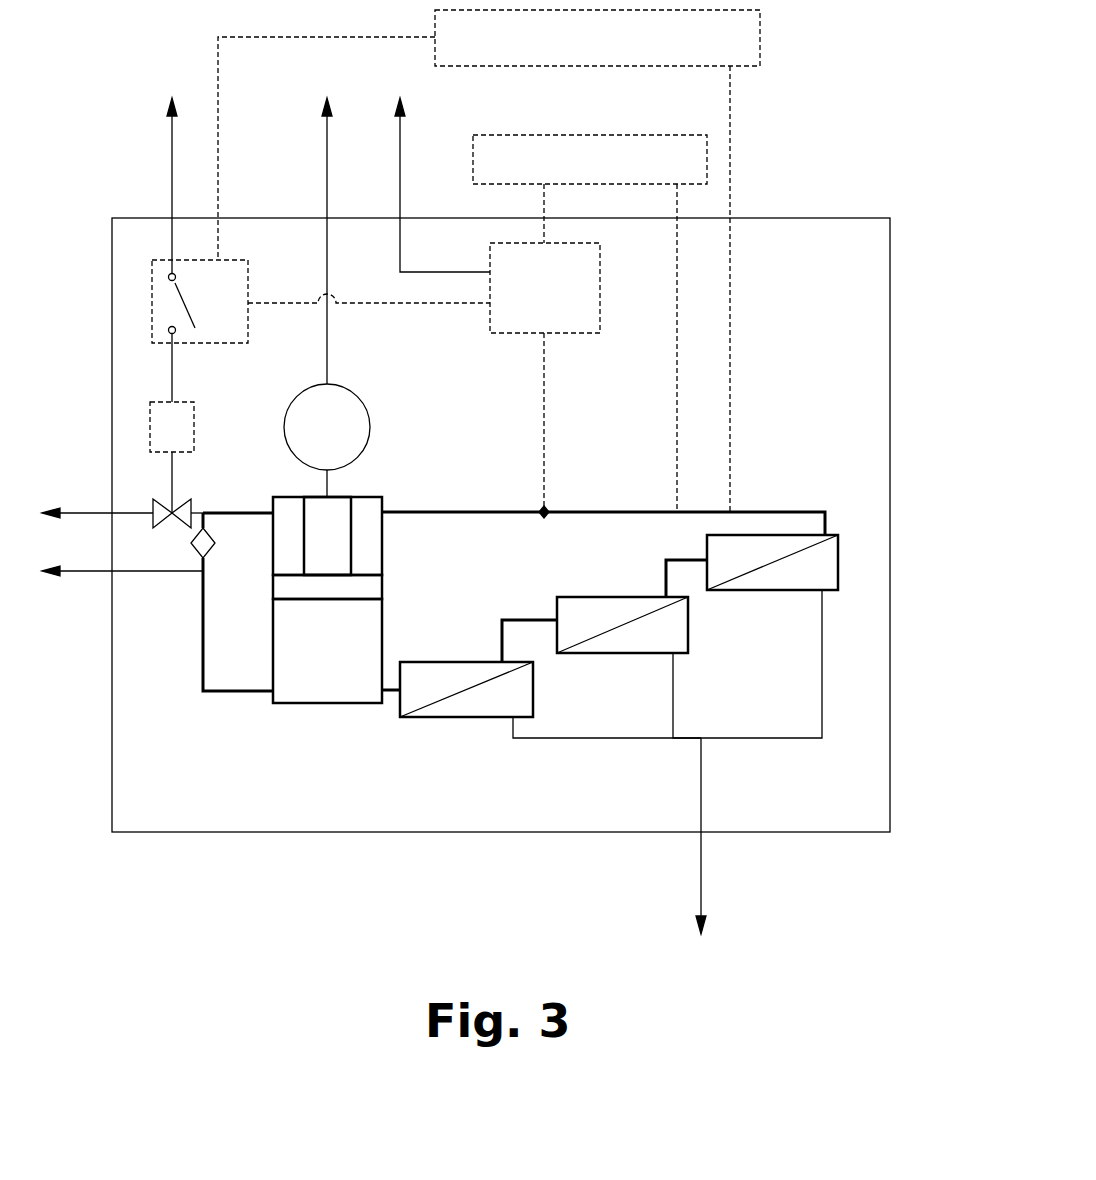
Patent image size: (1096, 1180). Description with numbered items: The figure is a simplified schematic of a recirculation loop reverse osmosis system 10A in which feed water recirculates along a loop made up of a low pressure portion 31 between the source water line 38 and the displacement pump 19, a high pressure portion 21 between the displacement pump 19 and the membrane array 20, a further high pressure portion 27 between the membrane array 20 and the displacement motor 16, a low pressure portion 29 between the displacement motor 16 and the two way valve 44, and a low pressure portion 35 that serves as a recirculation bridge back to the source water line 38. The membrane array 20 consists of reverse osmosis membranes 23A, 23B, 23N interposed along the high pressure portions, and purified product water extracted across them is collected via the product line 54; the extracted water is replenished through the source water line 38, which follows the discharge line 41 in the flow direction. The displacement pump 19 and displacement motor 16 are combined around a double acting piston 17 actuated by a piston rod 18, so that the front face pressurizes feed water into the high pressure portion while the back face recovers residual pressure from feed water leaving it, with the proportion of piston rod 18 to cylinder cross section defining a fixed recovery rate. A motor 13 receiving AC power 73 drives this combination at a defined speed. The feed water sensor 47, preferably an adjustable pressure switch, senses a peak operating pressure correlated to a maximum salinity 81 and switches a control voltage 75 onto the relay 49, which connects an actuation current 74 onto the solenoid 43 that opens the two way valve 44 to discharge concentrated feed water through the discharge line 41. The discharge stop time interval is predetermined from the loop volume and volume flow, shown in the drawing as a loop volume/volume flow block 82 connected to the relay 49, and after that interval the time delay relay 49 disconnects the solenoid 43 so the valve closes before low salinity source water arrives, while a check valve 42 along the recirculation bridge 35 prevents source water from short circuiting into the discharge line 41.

The recirculation loop reverse osmosis system 10A is at (98, 48).
The motor 13 is at (307, 384).
The displacement motor 16 is at (366, 535).
The double acting piston 17 is at (315, 590).
The piston rod 18 is at (330, 530).
The displacement pump 19 is at (288, 667).
The membrane array 20 is at (645, 900).
The high pressure portion 21 is at (392, 695).
The reverse osmosis membrane 23A is at (485, 717).
The reverse osmosis membrane 23B is at (623, 653).
The reverse osmosis membrane 23N is at (777, 593).
The high pressure portion 27 is at (783, 512).
The low pressure portion 29 is at (235, 517).
The low pressure portion 31 is at (200, 648).
The low pressure portion 35 is at (198, 568).
The source water line 38 is at (85, 577).
The discharge line 41 is at (93, 510).
The check valve 42 is at (190, 541).
The solenoid 43 is at (147, 417).
The two way valve 44 is at (155, 500).
The feed water sensor 47 is at (510, 243).
The relay 49 is at (152, 262).
The product line 54 is at (703, 848).
The AC power 73 is at (327, 176).
The actuation current 74 is at (172, 178).
The control voltage 75 is at (400, 180).
The maximum salinity 81 is at (473, 155).
The loop volume / volume flow controller 82 is at (440, 68).